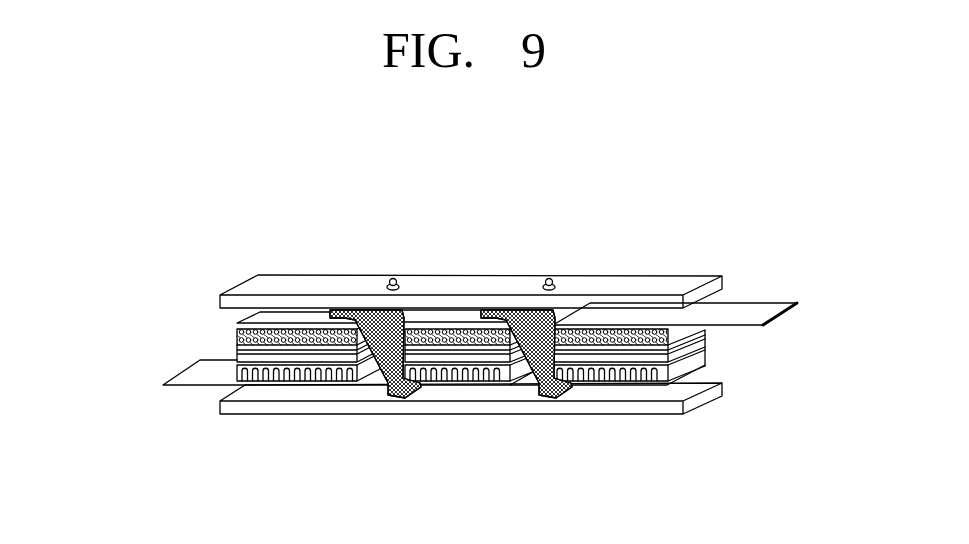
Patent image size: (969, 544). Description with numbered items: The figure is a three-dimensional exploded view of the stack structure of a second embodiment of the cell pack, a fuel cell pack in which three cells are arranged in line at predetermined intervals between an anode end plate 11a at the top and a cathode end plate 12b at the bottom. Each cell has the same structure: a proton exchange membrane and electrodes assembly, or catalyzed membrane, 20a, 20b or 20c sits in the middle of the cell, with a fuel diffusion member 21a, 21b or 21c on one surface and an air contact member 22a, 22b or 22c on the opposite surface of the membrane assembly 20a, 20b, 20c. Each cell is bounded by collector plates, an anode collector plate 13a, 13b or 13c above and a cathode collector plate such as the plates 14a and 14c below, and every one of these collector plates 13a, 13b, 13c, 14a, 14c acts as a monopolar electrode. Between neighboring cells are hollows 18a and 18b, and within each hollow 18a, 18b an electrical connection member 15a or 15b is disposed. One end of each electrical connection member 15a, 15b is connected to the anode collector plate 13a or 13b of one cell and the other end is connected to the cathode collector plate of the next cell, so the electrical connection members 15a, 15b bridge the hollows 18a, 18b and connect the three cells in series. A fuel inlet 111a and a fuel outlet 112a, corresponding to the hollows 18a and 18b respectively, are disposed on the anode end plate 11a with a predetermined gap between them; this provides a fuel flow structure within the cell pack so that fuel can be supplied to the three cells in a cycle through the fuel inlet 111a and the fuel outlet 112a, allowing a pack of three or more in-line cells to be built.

The anode end plate 11a is at (682, 287).
The lower plate 12b is at (707, 398).
The anode collector plate 13a is at (287, 320).
The anode collector plate 13b is at (453, 320).
The collector plate 13c is at (752, 317).
The collector plate 14a is at (163, 385).
The cathode collector plate 14c is at (648, 385).
The electrical connection member 15a is at (377, 318).
The electrical connection member 15b is at (535, 318).
The hollow 18a is at (366, 387).
The hollow 18b is at (528, 390).
The proton exchange membrane and electrodes assembly 20a is at (237, 354).
The proton exchange membrane and electrodes assembly 20b is at (408, 388).
The proton exchange membrane and electrodes assembly 20c is at (703, 350).
The fuel diffusion member 21a is at (238, 334).
The fuel diffusion member 21b is at (447, 345).
The fuel diffusion member 21c is at (703, 340).
The air contact member 22a is at (270, 376).
The air contact member 22b is at (485, 385).
The air contact member 22c is at (603, 385).
The fuel inlet 111a is at (394, 278).
The fuel outlet 112a is at (551, 278).